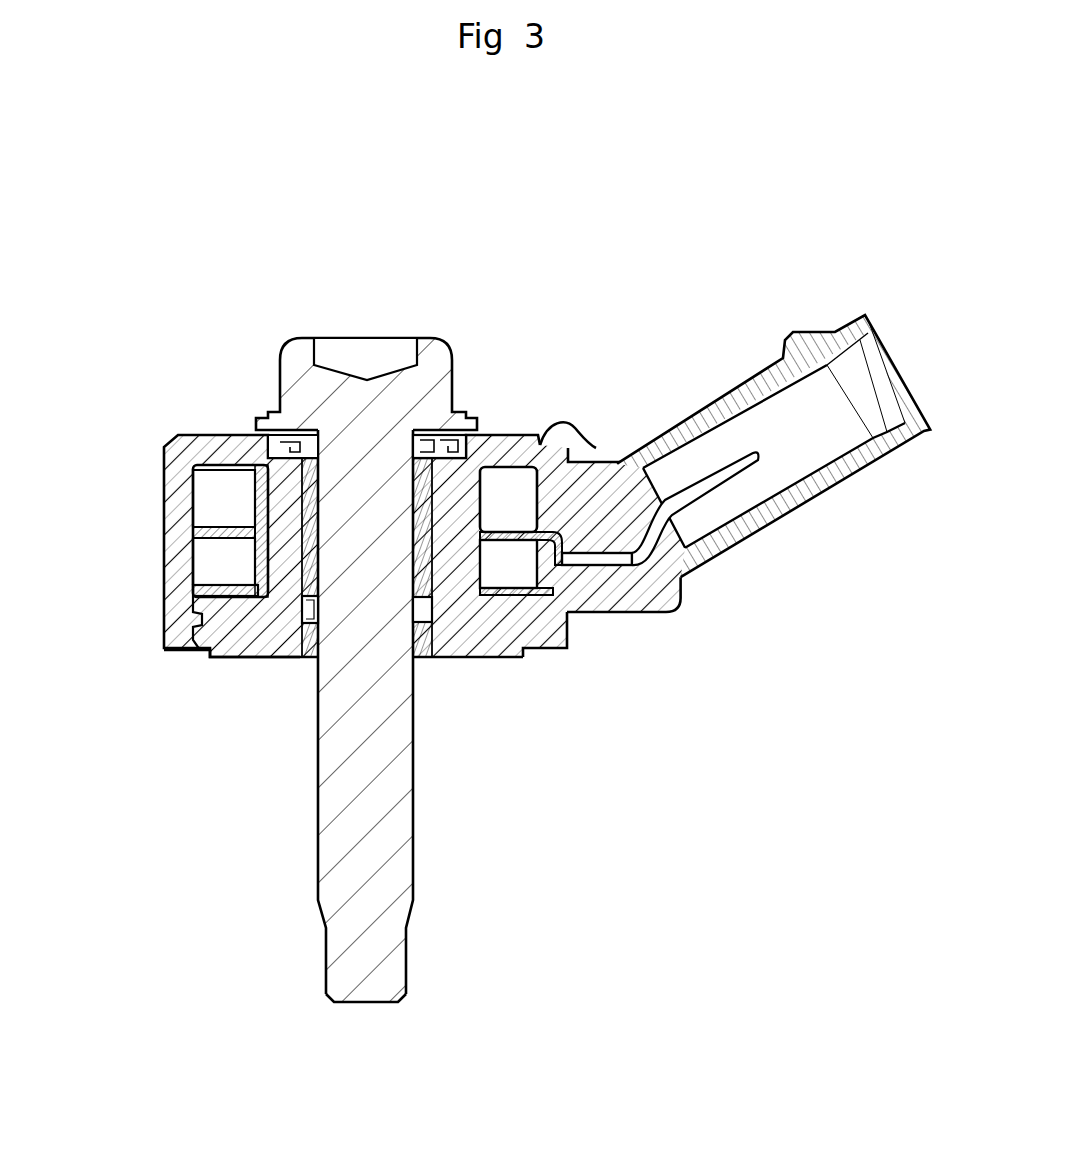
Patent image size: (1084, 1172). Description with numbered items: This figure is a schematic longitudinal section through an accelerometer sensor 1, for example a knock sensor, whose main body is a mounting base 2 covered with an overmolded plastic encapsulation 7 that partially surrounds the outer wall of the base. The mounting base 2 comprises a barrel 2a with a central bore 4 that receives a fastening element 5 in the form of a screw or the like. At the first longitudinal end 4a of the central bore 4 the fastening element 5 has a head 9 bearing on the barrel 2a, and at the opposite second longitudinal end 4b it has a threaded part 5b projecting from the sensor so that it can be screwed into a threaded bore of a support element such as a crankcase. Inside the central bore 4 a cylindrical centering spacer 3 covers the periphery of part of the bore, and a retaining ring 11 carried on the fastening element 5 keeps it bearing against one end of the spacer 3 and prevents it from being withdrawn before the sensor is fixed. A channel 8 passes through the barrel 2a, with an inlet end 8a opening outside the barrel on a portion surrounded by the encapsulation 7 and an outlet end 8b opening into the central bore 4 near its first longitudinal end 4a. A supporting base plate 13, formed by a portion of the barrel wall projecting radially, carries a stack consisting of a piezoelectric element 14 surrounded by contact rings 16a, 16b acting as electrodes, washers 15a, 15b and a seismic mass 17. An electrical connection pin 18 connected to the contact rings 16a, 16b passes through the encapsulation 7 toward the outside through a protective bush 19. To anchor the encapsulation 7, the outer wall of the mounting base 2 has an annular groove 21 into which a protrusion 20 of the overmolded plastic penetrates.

The accelerometer sensor 1 is at (202, 430).
The mounting base 2 is at (222, 653).
The barrel 2a is at (447, 527).
The spacer 3 is at (307, 512).
The central bore 4 is at (317, 628).
The first longitudinal end 4a is at (325, 435).
The second longitudinal end 4b is at (427, 650).
The fastening element 5 is at (392, 787).
The threaded part 5b is at (375, 975).
The encapsulation 7 is at (597, 447).
The channel 8 is at (444, 447).
The inlet end 8a is at (452, 447).
The outlet end 8b is at (428, 445).
The head 9 is at (268, 420).
The retaining ring 11 is at (307, 615).
The supporting base plate 13 is at (257, 623).
The piezoelectric element 14 is at (228, 553).
The washer 15a is at (517, 527).
The washer 15b is at (205, 575).
The contact ring 16a is at (500, 540).
The contact ring 16b is at (247, 598).
The seismic mass 17 is at (228, 503).
The electrical connection pin 18 is at (717, 483).
The protective bush 19 is at (768, 385).
The protrusion 20 is at (545, 595).
The groove 21 is at (535, 630).